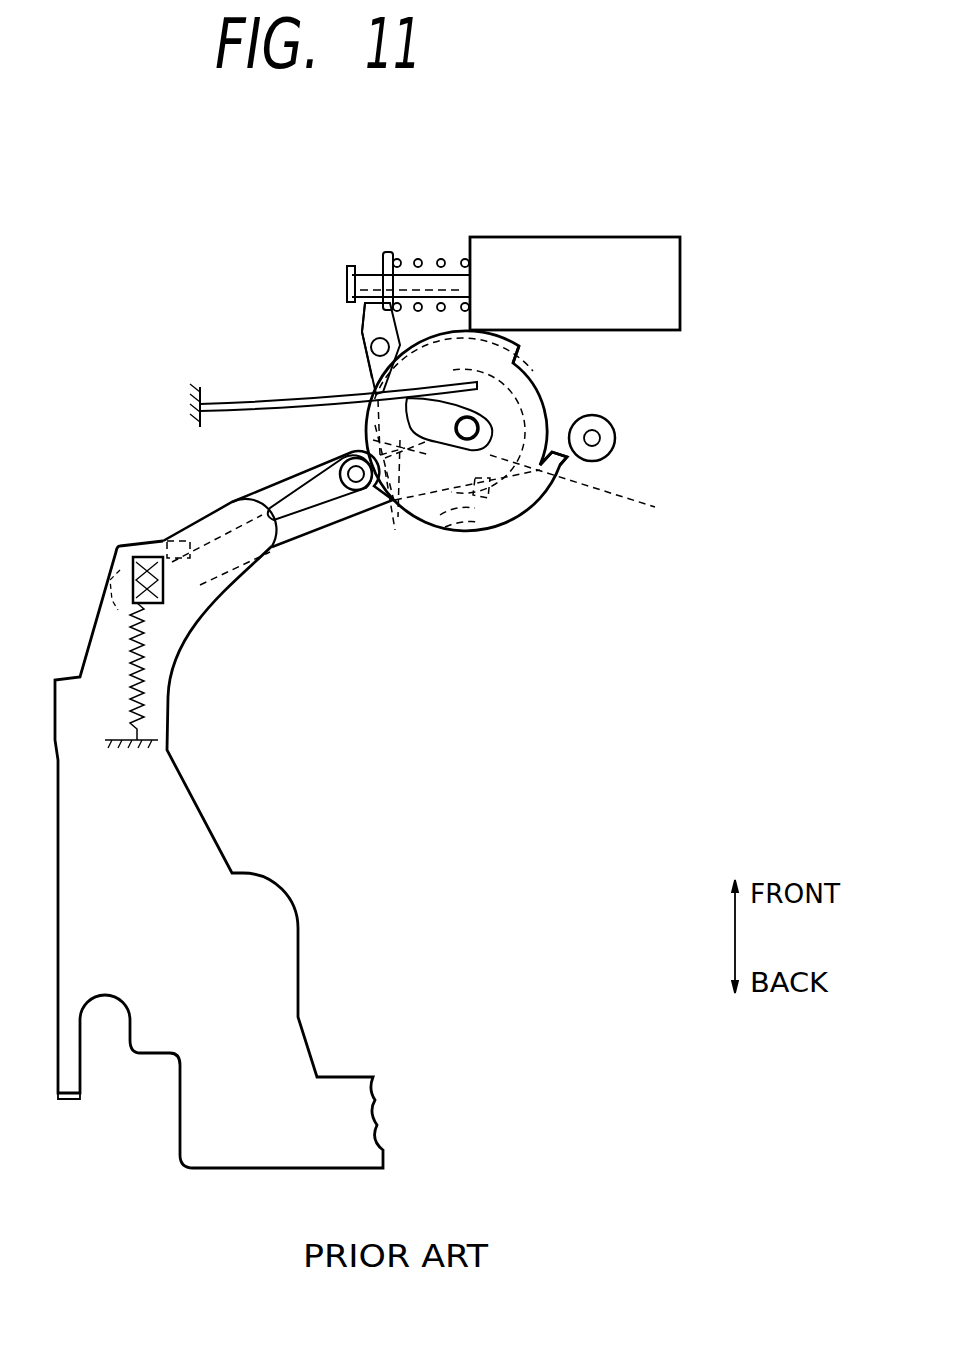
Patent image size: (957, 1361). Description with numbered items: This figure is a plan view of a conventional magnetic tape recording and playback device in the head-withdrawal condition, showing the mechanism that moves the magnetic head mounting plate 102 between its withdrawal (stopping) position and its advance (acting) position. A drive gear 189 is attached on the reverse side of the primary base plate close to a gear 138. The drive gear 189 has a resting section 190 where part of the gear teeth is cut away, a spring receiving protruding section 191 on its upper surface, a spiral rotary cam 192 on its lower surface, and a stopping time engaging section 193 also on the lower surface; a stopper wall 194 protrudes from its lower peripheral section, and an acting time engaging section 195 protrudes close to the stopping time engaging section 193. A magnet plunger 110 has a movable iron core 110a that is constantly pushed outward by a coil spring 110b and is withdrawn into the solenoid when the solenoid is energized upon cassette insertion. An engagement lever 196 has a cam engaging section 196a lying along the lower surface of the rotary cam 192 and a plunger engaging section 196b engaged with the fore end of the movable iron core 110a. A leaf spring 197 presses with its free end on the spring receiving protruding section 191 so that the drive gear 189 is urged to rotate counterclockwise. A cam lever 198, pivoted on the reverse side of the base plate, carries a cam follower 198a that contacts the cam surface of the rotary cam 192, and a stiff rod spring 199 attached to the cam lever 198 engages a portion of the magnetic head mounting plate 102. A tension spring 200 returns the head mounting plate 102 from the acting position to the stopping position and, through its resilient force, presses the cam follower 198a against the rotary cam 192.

The magnetic head mounting plate 102 is at (298, 955).
The magnet plunger 110 is at (603, 237).
The movable iron core 110a is at (342, 268).
The coil spring 110b is at (443, 250).
The gear 138 is at (613, 443).
The drive gear 189 is at (550, 497).
The resting section 190 is at (540, 382).
The spring receiving protruding section 191 is at (550, 410).
The spiral rotary cam 192 is at (525, 360).
The stopping time engaging section 193 is at (373, 440).
The stopper wall 194 is at (510, 523).
The acting time engaging section 195 is at (460, 532).
The engagement lever 196 is at (360, 360).
The cam engaging section 196a is at (398, 517).
The plunger engaging section 196b is at (363, 320).
The leaf spring 197 is at (257, 400).
The cam lever 198 is at (317, 533).
The cam follower 198a is at (605, 489).
The rod spring 199 is at (270, 486).
The tension spring 200 is at (145, 665).